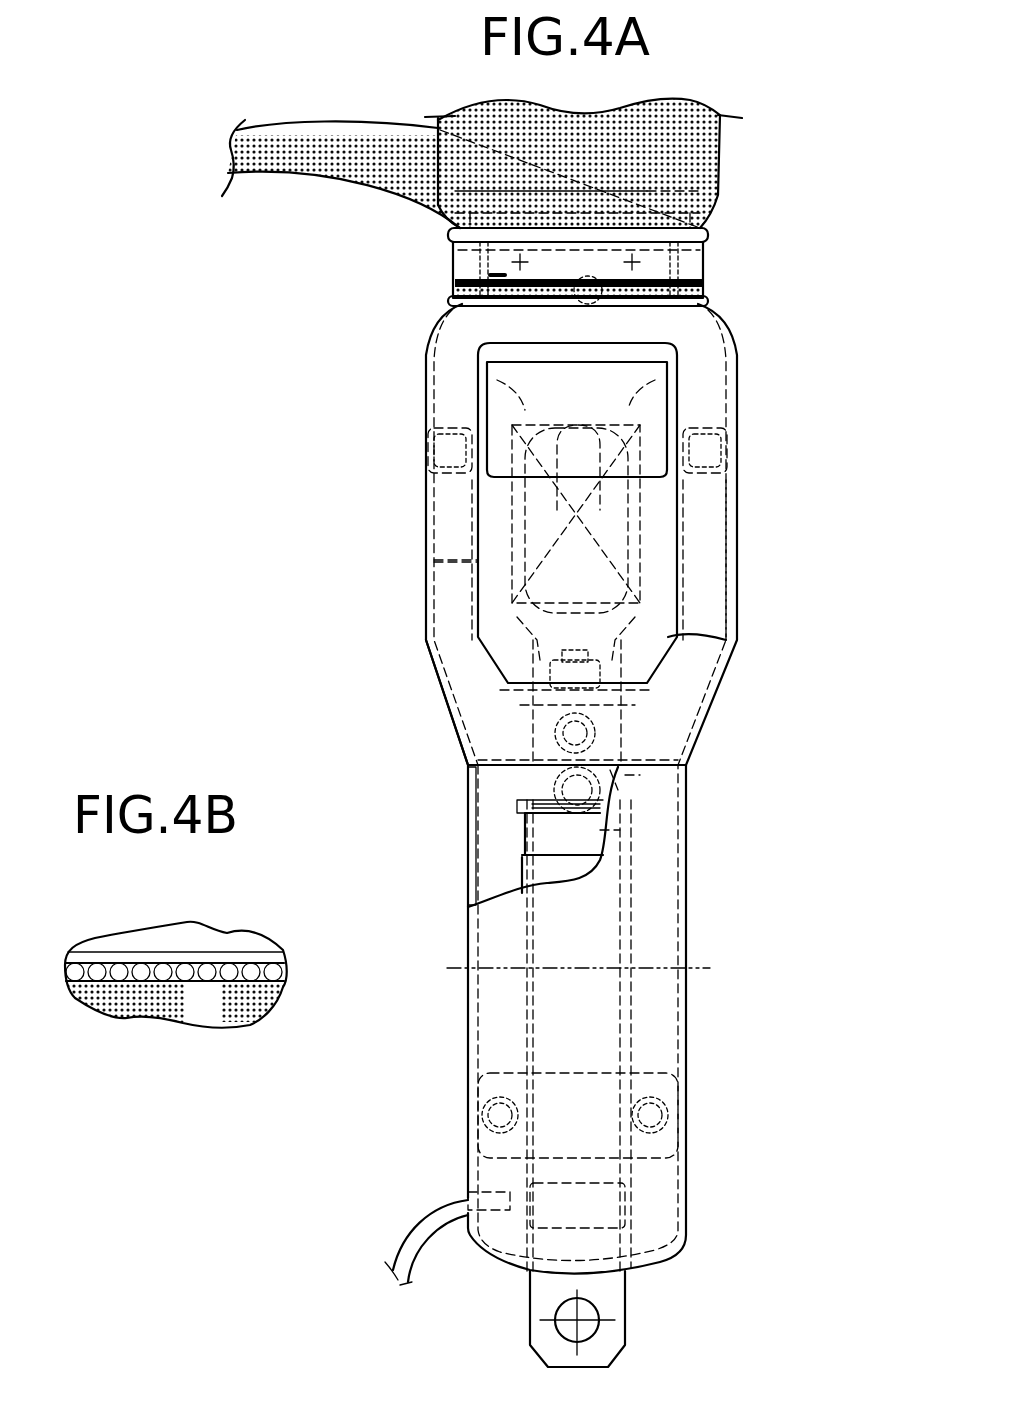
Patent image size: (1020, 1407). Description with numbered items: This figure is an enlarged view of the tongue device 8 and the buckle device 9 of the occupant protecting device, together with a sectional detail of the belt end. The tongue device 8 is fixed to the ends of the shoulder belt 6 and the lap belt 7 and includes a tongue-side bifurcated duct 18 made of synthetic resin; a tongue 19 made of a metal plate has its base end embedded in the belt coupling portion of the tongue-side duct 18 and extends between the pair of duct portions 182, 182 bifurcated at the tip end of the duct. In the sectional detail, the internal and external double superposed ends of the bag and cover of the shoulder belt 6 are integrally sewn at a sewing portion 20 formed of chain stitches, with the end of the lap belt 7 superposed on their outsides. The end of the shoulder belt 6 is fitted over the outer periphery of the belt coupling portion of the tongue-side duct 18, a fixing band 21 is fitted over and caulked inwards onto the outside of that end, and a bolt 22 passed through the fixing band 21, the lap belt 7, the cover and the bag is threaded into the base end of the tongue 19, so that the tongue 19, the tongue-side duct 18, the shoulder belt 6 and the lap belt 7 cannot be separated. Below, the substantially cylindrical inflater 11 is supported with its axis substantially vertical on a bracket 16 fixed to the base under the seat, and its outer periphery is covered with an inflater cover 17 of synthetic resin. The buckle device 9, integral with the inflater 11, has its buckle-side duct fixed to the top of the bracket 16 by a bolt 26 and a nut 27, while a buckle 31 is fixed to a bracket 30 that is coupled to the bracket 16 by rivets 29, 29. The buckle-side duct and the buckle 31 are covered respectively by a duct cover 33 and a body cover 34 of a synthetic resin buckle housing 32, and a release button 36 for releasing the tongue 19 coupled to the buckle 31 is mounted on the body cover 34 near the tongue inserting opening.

In FIG. 4A, the shoulder belt 6 is at (720, 173).
In FIG. 4B, the shoulder belt 6 is at (113, 1012).
In FIG. 4A, the lap belt 7 is at (258, 172).
In FIG. 4A, the tongue device 8 is at (405, 336).
In FIG. 4A, the buckle device 9 is at (424, 598).
In FIG. 4A, the inflater 11 is at (522, 835).
In FIG. 4A, the bracket 16 is at (612, 1308).
In FIG. 4A, the inflater cover 17 is at (668, 900).
In FIG. 4A, the tongue-side bifurcated duct 18 is at (720, 320).
In FIG. 4A, the tongue 19 is at (576, 496).
In FIG. 4A, the sewing portion 20 is at (700, 285).
In FIG. 4B, the sewing portion 20 is at (183, 984).
In FIG. 4A, the fixing band 21 is at (460, 262).
In FIG. 4B, the fixing band 21 is at (158, 945).
In FIG. 4A, the bolt 22 is at (592, 292).
In FIG. 4A, the bolt 26 is at (576, 630).
In FIG. 4A, the nut 27 is at (546, 657).
In FIG. 4A, the rivets 29 is at (560, 735).
In FIG. 4A, the bracket 30 is at (599, 702).
In FIG. 4A, the buckle 31 is at (434, 570).
In FIG. 4A, the buckle housing 32 is at (740, 512).
In FIG. 4A, the duct cover 33 is at (442, 678).
In FIG. 4A, the body cover 34 is at (690, 645).
In FIG. 4A, the release button 36 is at (498, 478).
In FIG. 4A, the duct portions 182 is at (735, 393).